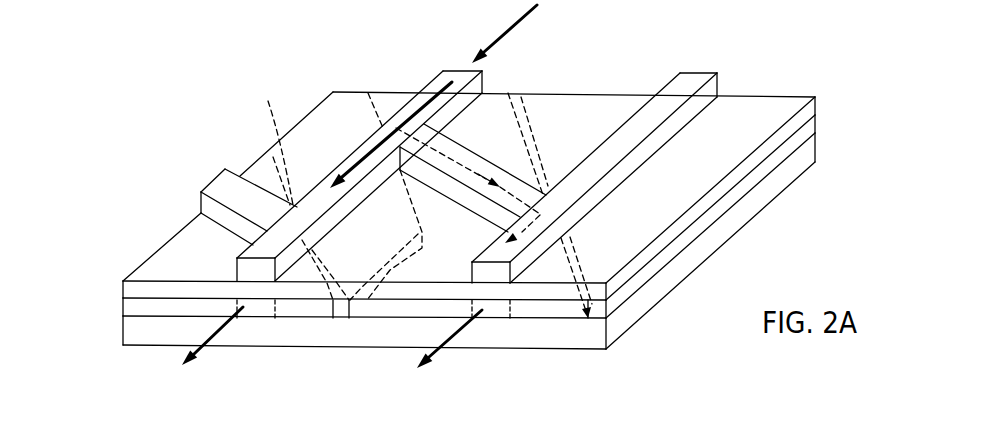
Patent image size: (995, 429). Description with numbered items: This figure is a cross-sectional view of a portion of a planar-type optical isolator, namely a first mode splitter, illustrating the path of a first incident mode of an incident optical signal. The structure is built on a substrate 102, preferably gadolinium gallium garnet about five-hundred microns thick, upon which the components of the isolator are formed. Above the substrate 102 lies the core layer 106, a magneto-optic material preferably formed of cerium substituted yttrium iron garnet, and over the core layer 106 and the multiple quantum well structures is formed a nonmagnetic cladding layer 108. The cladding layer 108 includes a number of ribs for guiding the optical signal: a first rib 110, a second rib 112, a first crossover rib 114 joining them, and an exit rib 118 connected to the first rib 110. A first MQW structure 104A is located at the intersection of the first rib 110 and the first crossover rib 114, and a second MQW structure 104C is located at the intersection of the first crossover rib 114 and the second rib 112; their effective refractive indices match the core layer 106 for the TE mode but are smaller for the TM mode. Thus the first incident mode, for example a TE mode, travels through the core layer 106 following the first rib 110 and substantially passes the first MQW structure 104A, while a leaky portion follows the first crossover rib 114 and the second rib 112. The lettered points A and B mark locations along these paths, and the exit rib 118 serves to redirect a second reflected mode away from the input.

The substrate 102 is at (130, 330).
The core layer 106 is at (137, 310).
The cladding layer 108 is at (133, 290).
The first MQW structure 104A is at (283, 189).
The second MQW structure 104C is at (565, 255).
The first rib 110 is at (450, 72).
The second rib 112 is at (689, 80).
The first crossover rib 114 is at (508, 182).
The exit rib 118 is at (216, 182).
The coupling point A is at (540, 215).
The coupling point B is at (540, 215).